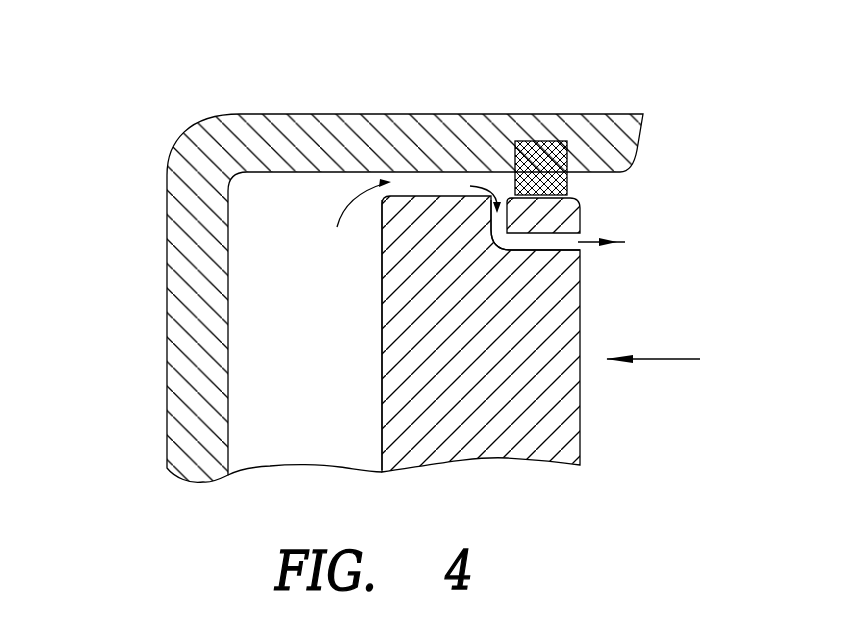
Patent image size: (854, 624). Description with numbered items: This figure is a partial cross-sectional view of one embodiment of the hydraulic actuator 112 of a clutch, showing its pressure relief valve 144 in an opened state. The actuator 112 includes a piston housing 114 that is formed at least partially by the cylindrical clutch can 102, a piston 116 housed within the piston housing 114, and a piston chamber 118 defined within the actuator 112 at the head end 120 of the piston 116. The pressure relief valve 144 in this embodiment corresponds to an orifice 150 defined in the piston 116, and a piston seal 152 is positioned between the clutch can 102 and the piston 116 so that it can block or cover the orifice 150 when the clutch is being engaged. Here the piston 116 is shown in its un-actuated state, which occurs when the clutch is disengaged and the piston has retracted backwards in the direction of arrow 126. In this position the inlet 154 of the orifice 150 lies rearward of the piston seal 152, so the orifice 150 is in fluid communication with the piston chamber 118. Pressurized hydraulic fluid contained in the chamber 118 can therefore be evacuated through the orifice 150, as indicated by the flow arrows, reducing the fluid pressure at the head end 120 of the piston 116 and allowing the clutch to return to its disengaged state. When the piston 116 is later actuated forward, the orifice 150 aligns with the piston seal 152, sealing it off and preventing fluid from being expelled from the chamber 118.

The hydraulic actuator 112 is at (353, 247).
The clutch can 102 is at (405, 272).
The piston housing 114 is at (353, 113).
The piston chamber 118 is at (323, 313).
The piston 116 is at (484, 334).
The head end 120 is at (382, 417).
The orifice 150 is at (530, 245).
The piston seal 152 is at (534, 141).
The inlet 154 is at (488, 207).
The pressure relief valve 144 is at (622, 223).
The direction of arrow 126 is at (662, 359).